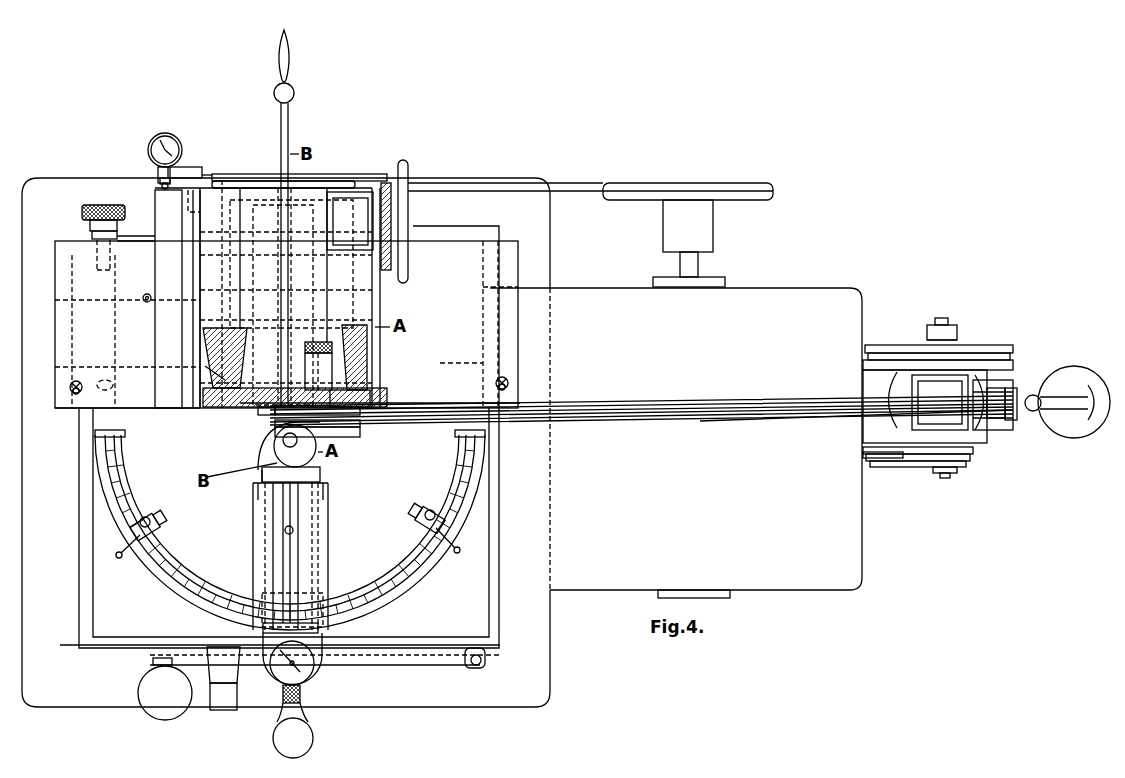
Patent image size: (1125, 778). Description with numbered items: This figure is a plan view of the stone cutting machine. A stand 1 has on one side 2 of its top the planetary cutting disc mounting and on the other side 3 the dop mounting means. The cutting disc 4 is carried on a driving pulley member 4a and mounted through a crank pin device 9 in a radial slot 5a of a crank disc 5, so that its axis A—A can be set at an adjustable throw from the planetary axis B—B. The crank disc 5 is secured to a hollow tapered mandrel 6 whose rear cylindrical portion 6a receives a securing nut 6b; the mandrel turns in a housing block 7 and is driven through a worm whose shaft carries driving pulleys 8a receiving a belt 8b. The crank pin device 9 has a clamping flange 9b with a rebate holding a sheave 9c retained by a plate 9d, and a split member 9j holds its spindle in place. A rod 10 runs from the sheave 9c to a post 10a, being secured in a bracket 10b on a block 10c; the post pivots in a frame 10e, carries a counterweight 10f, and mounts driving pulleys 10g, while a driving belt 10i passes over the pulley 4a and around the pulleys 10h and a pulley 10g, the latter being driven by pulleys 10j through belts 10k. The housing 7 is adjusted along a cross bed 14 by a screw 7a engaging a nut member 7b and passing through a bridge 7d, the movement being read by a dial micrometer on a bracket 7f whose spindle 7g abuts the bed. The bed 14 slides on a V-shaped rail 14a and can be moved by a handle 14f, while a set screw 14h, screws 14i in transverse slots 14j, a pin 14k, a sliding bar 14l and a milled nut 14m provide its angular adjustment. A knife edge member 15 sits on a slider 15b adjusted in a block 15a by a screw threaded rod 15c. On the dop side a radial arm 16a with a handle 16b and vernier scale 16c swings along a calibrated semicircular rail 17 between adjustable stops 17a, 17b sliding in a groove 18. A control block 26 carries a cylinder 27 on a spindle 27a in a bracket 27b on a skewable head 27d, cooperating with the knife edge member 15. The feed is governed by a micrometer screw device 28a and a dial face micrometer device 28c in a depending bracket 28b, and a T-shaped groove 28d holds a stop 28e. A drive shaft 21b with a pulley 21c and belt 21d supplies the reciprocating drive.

The stand 1 is at (82, 509).
The side of the stand platform 2 is at (18, 225).
The side of the stand platform 3 is at (20, 671).
The cutting disc 4 is at (317, 434).
The driving pulley member 4a is at (355, 428).
The crank disc 5 is at (208, 407).
The radial slot 5a is at (345, 393).
The hollow tapered mandrel 6 is at (203, 343).
The cylindrical portion 6a is at (320, 176).
The securing nut 6b is at (340, 183).
The housing block 7 is at (195, 272).
The adjustment screw 7a is at (290, 127).
The nut member 7b is at (161, 297).
The bridge 7d is at (222, 183).
The bracket 7f is at (186, 168).
The micrometer spindle 7g is at (162, 184).
The driving pulleys 8a is at (386, 182).
The belt 8b is at (408, 170).
The crank pin device 9 is at (332, 378).
The clamping flange 9b is at (258, 411).
The sheave 9c is at (372, 398).
The plate 9d is at (370, 425).
The split member 9j is at (332, 349).
The rod 10 is at (622, 410).
The post 10a is at (1045, 393).
The bracket 10b is at (988, 420).
The block 10c is at (1037, 412).
The frame 10e is at (872, 458).
The counterweight 10f is at (905, 425).
The driving pulleys 10g is at (880, 358).
The pulleys 10h is at (1010, 390).
The driving belt 10i is at (820, 412).
The pulleys 10j is at (930, 472).
The belts 10k is at (897, 455).
The cross bed 14 is at (520, 258).
The V-shaped rail 14a is at (127, 420).
The handle 14f is at (237, 692).
The set screw 14h is at (205, 366).
The screws 14i is at (508, 386).
The transverse slots 14j is at (505, 380).
The pin 14k is at (106, 331).
The sliding bar 14l is at (90, 224).
The milled nut 14m is at (84, 208).
The knife edge member 15 is at (268, 432).
The block 15a is at (200, 320).
The slider 15b is at (200, 383).
The screw threaded rod 15c is at (265, 178).
The radial arm 16a is at (258, 498).
The handle 16b is at (306, 722).
The vernier scale 16c is at (322, 593).
The semicircular rail 17 is at (290, 530).
The adjustable stop 17a is at (147, 520).
The adjustable stop 17b is at (426, 518).
The groove 18 is at (178, 565).
The drive shaft 21b is at (700, 262).
The pulley 21c is at (688, 180).
The belt 21d is at (494, 186).
The control block 26 is at (326, 527).
The cylinder 27 is at (270, 447).
The spindle 27a is at (296, 446).
The bracket 27b is at (265, 470).
The head 27d is at (300, 480).
The micrometer screw device 28a is at (302, 694).
The depending bracket 28b is at (320, 632).
The dial face micrometer device 28c is at (315, 673).
The T-shaped groove 28d is at (290, 505).
The stop 28e is at (294, 532).